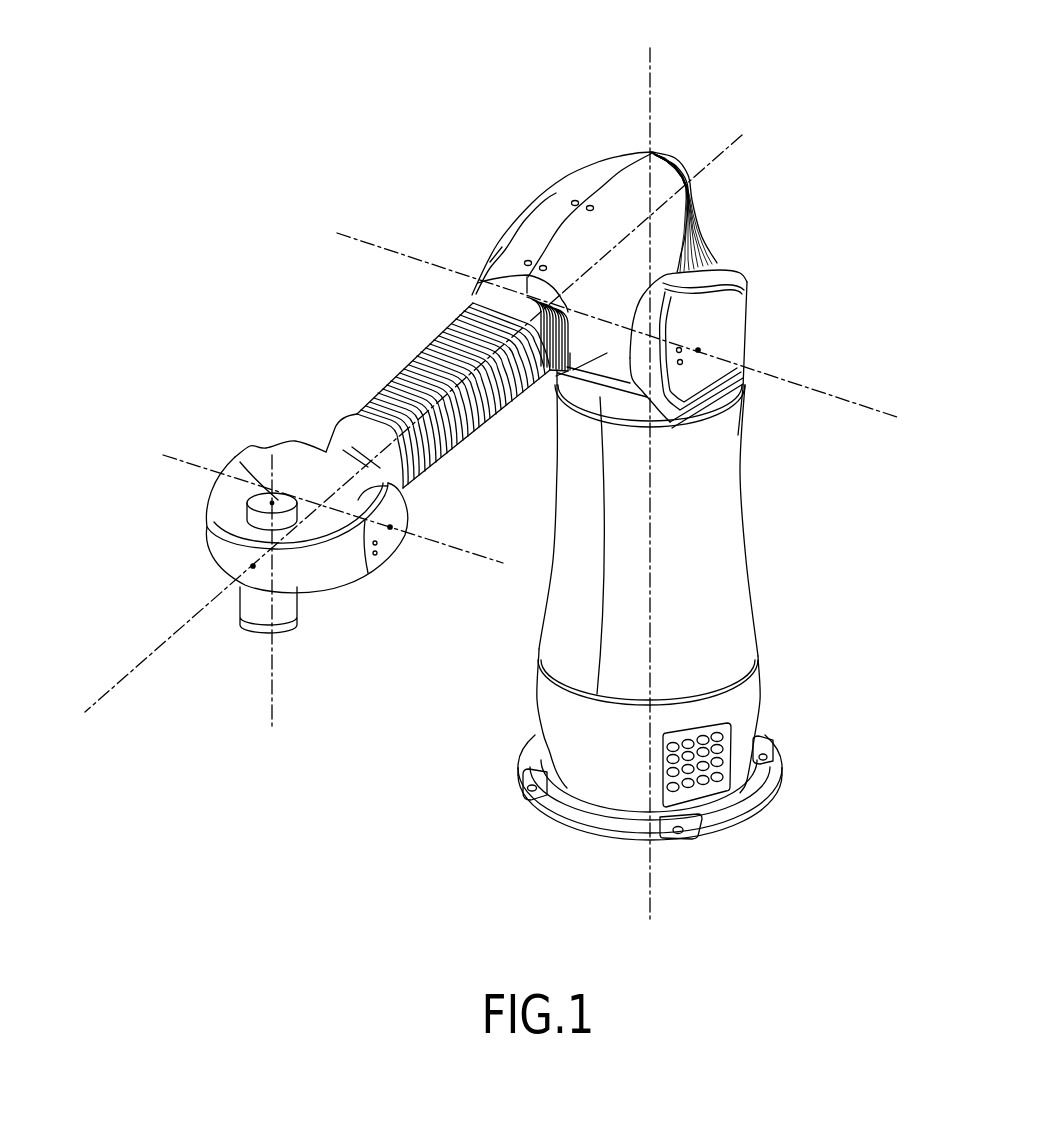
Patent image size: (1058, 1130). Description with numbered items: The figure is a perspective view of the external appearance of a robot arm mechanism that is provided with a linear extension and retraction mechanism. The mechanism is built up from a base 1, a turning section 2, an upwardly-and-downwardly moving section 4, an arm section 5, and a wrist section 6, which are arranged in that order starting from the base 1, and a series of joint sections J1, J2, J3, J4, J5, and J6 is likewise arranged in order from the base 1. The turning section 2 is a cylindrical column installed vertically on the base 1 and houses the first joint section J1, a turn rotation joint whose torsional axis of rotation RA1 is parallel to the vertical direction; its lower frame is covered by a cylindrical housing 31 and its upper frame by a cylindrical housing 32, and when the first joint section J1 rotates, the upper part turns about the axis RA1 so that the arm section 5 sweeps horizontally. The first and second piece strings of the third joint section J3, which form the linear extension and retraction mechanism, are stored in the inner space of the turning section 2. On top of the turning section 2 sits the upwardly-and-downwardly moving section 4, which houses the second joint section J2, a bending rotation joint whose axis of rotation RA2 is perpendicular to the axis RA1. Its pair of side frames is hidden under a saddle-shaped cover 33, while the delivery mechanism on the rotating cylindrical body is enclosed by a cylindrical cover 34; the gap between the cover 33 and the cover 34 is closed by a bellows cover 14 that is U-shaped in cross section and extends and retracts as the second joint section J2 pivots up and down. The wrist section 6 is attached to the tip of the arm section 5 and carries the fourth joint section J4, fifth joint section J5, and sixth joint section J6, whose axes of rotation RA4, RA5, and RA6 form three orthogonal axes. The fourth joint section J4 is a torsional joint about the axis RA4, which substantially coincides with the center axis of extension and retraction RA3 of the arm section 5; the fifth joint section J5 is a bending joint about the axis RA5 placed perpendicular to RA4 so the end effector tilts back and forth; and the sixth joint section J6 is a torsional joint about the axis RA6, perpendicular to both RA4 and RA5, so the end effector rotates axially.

The base 1 is at (780, 782).
The turning section 2 is at (827, 563).
The housing 31 is at (760, 710).
The housing 32 is at (742, 483).
The cover 33 is at (748, 326).
The cover 34 is at (547, 234).
The upwardly-and-downwardly moving section 4 is at (567, 150).
The arm section 5 is at (382, 323).
The wrist section 6 is at (243, 421).
The U-shaped bellows cover 14 is at (713, 226).
The first joint section J1 is at (768, 654).
The second joint section J2 is at (619, 396).
The third joint section J3 is at (462, 306).
The fourth joint section J4 is at (340, 410).
The fifth joint section J5 is at (392, 575).
The sixth joint section J6 is at (242, 632).
The axis of rotation RA1 is at (656, 469).
The axis of rotation RA2 is at (648, 341).
The center axis of extension and retraction RA3 is at (666, 191).
The fourth axis of rotation RA4 is at (301, 524).
The fifth axis of rotation RA5 is at (304, 490).
The sixth axis of rotation RA6 is at (271, 609).